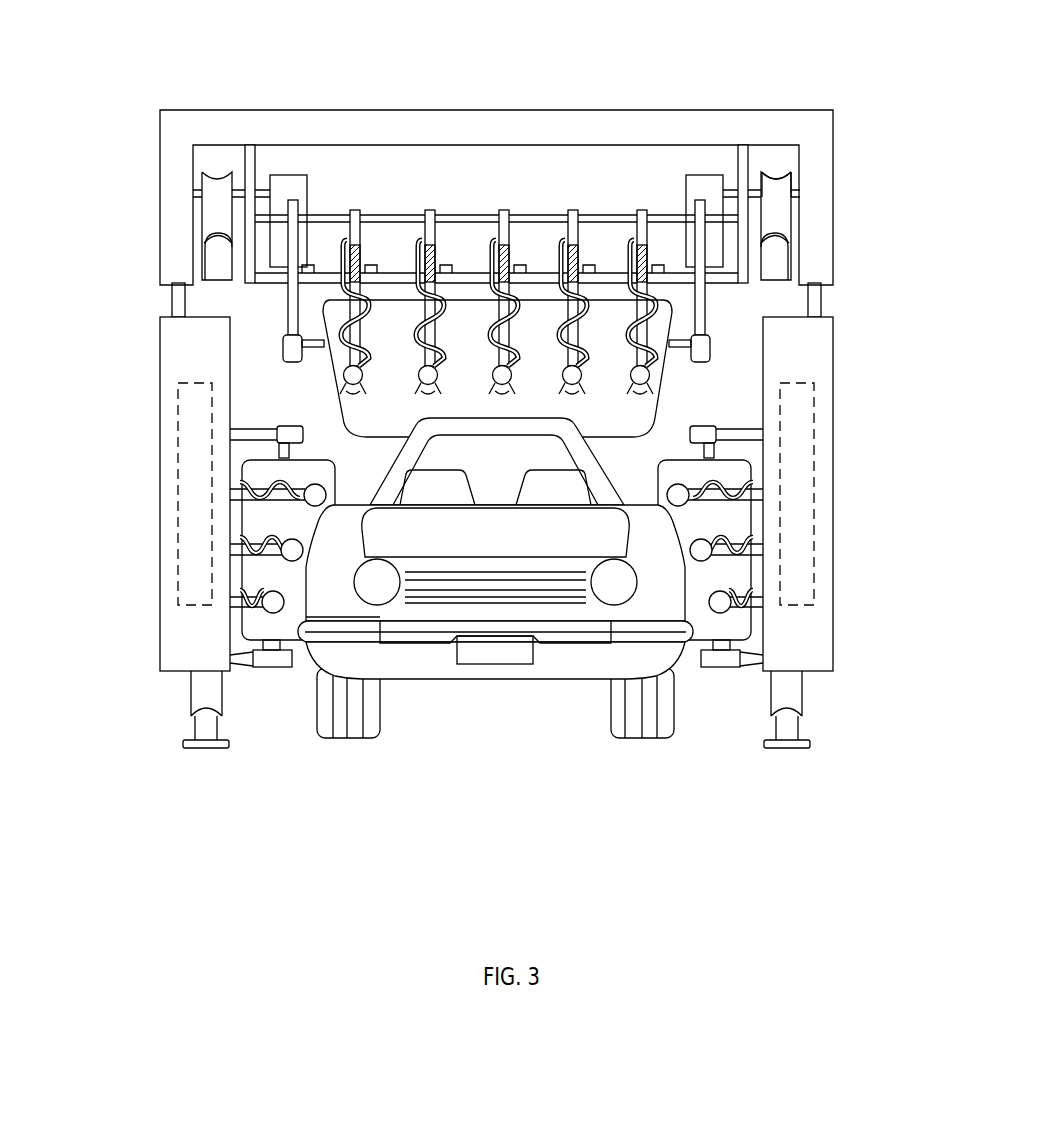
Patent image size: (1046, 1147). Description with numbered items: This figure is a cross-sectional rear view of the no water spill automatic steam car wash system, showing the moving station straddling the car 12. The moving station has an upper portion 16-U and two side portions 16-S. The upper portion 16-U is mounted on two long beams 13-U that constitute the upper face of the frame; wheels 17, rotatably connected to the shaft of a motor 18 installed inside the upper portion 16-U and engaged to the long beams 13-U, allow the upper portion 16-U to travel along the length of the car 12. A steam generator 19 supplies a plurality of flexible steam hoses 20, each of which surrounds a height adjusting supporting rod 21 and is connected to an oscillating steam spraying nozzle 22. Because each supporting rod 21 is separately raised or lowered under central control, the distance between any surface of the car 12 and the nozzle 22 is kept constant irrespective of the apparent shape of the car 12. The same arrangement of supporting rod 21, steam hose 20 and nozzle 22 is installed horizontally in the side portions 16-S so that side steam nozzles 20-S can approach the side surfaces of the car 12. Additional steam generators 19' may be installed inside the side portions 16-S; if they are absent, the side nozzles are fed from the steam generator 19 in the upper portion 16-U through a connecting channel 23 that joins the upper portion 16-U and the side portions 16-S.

The car 12 is at (447, 543).
The long beams 13-U is at (213, 262).
The upper portion 16-U is at (643, 133).
The side portions 16-S is at (735, 577).
The wheels 17 is at (775, 188).
The motor 18 is at (290, 182).
The steam generator 19 is at (496, 209).
The steam generators 19' is at (508, 494).
The flexible steam hoses 20 is at (336, 262).
The side nozzle 20-S is at (712, 483).
The height adjusting supporting rod 21 is at (503, 305).
The oscillating steam spraying nozzle 22 is at (345, 373).
The connecting channel 23 is at (818, 305).